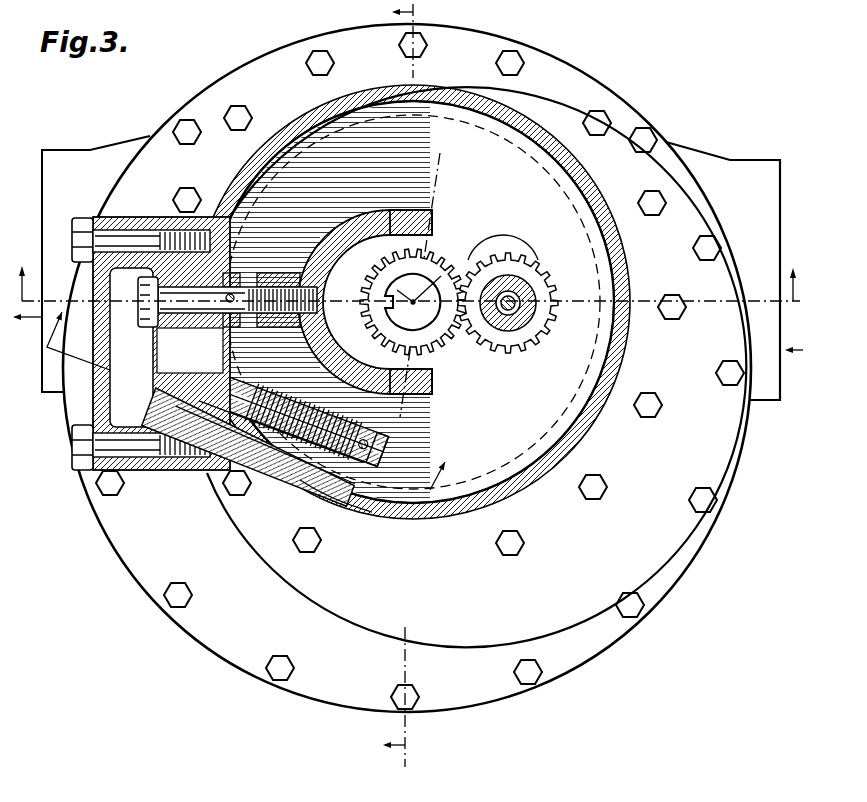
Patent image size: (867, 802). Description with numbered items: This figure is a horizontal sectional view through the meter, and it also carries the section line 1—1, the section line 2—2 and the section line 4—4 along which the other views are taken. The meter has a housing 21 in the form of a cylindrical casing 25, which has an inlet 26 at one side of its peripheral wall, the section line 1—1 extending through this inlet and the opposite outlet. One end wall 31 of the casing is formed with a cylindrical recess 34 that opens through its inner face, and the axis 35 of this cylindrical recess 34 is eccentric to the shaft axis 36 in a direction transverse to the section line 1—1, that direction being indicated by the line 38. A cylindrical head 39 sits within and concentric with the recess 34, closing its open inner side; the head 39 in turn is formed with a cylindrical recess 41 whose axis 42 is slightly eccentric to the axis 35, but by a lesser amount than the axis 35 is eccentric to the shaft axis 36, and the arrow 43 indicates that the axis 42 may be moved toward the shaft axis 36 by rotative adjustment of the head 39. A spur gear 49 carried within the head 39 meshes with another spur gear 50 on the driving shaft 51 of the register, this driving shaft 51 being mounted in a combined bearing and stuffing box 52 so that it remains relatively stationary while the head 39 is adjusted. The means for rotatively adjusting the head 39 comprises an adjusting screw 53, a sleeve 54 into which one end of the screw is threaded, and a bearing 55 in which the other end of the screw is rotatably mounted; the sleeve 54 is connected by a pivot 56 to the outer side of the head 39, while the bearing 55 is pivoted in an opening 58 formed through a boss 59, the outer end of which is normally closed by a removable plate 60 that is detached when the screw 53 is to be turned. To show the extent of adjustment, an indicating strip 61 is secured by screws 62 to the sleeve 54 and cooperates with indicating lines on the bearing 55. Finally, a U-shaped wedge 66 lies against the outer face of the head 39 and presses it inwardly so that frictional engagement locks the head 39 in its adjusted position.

The section line 1- 1 is at (408, 299).
The section line 2- 2 is at (391, 398).
The section line 4- 4 is at (246, 394).
The housing 21 is at (40, 393).
The cylindrical casing 25 is at (678, 585).
The inlet 26 is at (752, 400).
The end wall 31 is at (673, 564).
The cylindrical recess 34 is at (593, 203).
The axis of cylindrical recess 35 is at (452, 283).
The shaft axis 36 is at (410, 372).
The line 38 is at (427, 205).
The cylindrical head 39 is at (423, 123).
The cylindrical recess 41 is at (460, 340).
The axis of recess 42 is at (318, 300).
The arrow 43 is at (305, 320).
The spur gear 49 is at (440, 352).
The spur gear 50 is at (517, 350).
The driving shaft 51 is at (520, 300).
The combined bearing and stuffing box 52 is at (520, 282).
The adjusting screw 53 is at (180, 463).
The sleeve 54 is at (340, 463).
The bearing 55 is at (161, 343).
The pivot 56 is at (370, 522).
The opening 58 is at (177, 457).
The boss 59 is at (233, 473).
The removable plate 60 is at (98, 215).
The indicating strip 61 is at (160, 433).
The screws 62 is at (280, 460).
The U-shaped wedge 66 is at (432, 212).